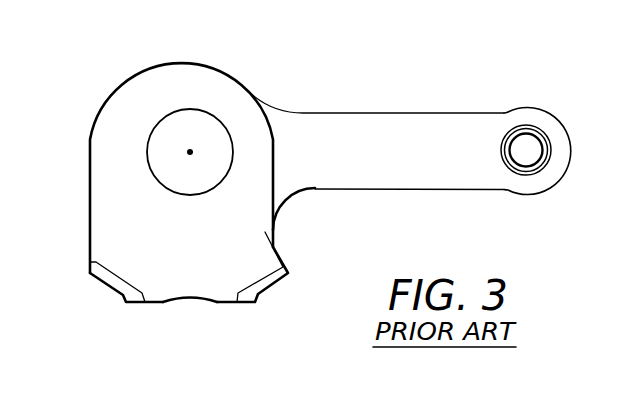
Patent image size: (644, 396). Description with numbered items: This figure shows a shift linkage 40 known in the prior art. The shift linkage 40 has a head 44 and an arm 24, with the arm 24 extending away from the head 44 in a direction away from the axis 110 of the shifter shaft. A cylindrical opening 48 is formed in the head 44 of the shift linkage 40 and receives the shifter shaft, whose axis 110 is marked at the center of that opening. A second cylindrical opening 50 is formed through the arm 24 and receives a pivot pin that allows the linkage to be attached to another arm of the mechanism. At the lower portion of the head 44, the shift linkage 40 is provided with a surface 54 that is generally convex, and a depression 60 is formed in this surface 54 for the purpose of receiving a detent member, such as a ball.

The shift linkage 40 is at (313, 196).
The axis of the shifter shaft 110 is at (190, 149).
The cylindrical opening 48 is at (230, 137).
The head 44 is at (100, 232).
The surface 54 is at (128, 295).
The depression 60 is at (190, 308).
The arm 24 is at (415, 175).
The cylindrical opening 50 is at (537, 160).